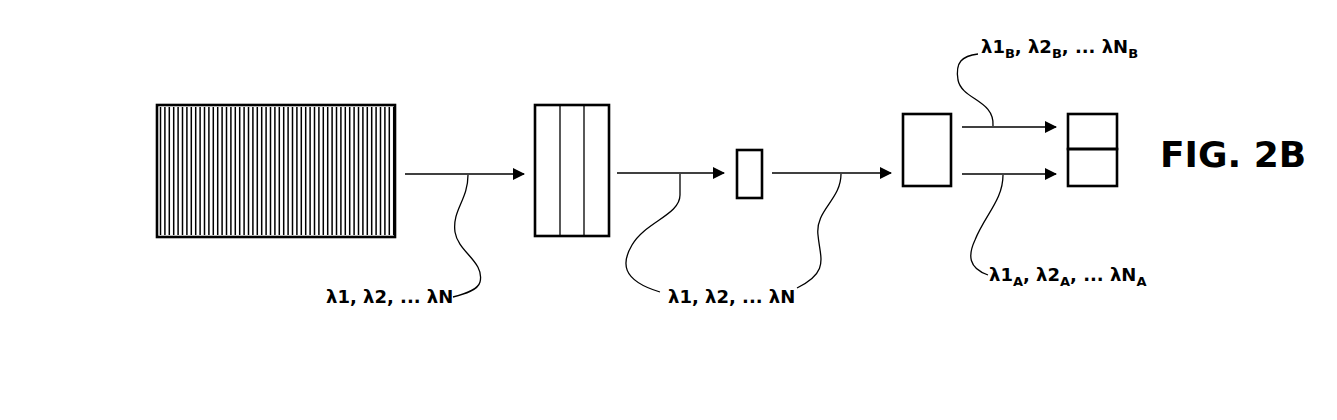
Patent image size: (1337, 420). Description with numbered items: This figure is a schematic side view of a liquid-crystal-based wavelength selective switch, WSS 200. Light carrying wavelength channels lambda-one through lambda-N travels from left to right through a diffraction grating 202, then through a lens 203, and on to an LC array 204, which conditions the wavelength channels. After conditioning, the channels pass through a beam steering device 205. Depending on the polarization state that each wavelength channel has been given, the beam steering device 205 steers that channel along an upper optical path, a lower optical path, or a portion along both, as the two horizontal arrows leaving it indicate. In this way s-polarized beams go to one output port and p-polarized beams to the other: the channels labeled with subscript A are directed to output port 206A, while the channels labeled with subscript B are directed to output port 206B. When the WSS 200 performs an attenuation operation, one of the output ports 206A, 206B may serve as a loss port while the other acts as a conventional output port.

The WSS 200 is at (280, 276).
The diffraction grating 202 is at (252, 104).
The lens 203 is at (563, 104).
The LC array 204 is at (750, 199).
The beam steering device 205 is at (918, 197).
The output port 206A is at (1118, 173).
The output port 206B is at (1118, 133).